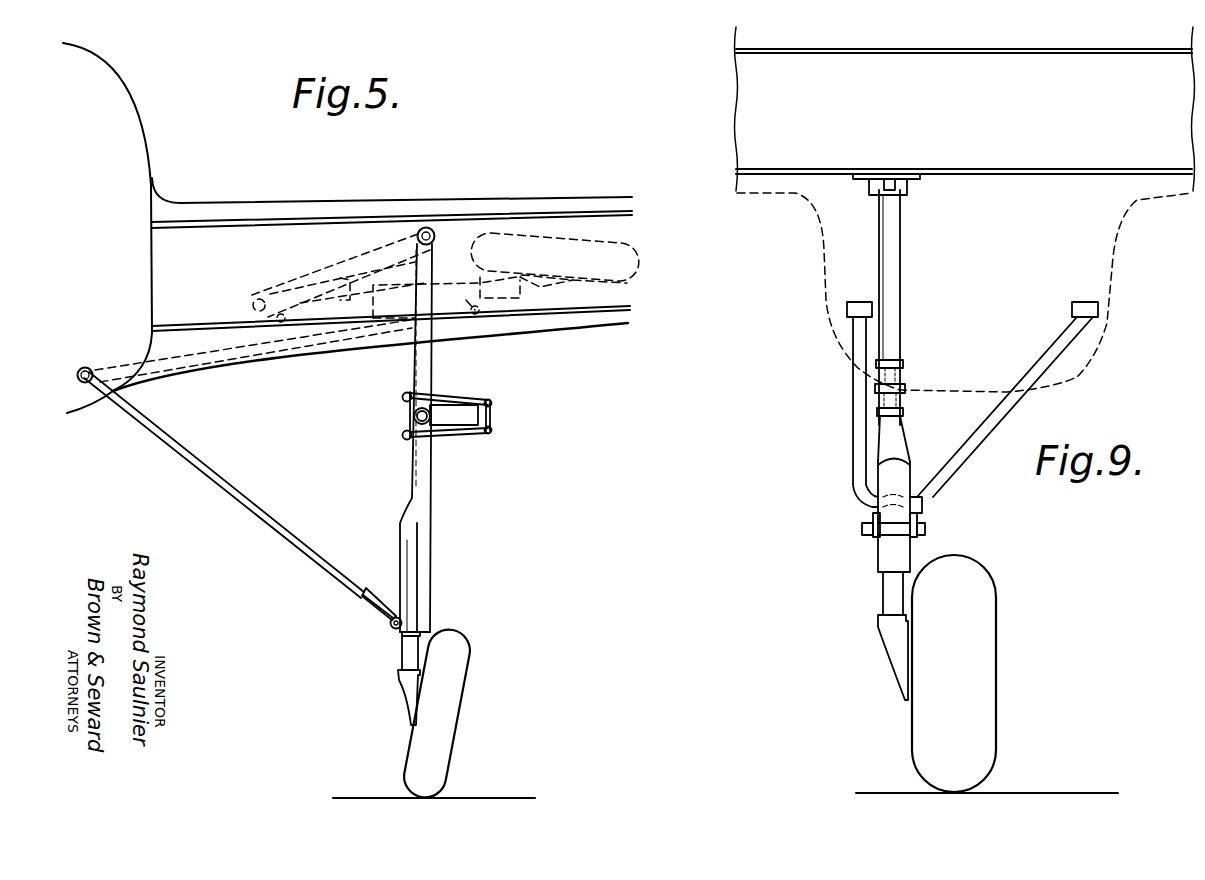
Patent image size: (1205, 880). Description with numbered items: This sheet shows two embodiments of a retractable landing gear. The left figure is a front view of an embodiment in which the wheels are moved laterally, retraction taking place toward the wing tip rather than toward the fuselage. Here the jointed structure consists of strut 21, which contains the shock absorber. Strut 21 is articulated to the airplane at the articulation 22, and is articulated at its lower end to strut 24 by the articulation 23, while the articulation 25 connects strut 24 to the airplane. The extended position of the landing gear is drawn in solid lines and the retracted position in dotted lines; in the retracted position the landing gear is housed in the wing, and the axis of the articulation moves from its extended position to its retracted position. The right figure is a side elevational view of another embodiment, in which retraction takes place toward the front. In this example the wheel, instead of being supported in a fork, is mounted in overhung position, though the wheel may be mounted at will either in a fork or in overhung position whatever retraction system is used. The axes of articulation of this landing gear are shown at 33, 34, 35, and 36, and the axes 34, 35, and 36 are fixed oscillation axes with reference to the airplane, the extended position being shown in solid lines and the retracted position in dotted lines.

In FIG. 5, the strut 21 is at (422, 493).
In FIG. 5, the articulation of strut 21 to the airplane 22 is at (435, 235).
In FIG. 5, the articulation of strut 21 to strut 24 23 is at (392, 627).
In FIG. 5, the strut 24 is at (237, 493).
In FIG. 5, the articulation of strut 24 to the airplane 25 is at (90, 366).
In FIG. 9, the axis of articulation 33 is at (921, 527).
In FIG. 9, the axis of articulation 34 is at (862, 301).
In FIG. 9, the axis of articulation 35 is at (1083, 302).
In FIG. 9, the axis of articulation 36 is at (893, 172).